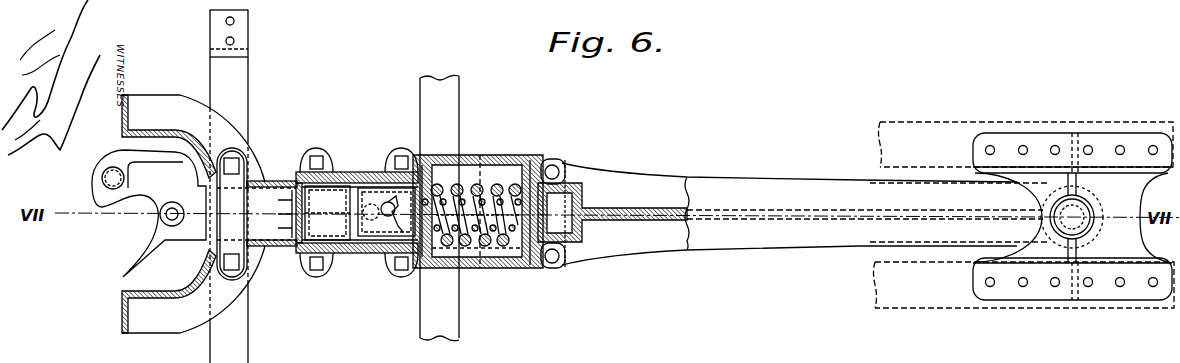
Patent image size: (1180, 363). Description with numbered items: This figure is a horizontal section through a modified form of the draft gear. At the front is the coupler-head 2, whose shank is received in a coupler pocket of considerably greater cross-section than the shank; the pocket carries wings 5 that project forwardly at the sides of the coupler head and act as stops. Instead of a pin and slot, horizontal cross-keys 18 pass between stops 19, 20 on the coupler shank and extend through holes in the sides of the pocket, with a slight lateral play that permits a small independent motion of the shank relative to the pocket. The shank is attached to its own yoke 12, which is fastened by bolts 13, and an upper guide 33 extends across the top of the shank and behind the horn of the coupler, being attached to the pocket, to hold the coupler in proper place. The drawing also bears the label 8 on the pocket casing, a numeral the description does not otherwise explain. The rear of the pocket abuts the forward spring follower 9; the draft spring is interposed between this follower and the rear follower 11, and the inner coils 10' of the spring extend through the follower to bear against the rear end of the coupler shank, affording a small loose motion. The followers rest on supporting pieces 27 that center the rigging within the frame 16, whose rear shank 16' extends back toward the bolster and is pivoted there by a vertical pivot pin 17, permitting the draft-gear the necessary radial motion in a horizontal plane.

The coupler-head 2 is at (149, 213).
The wings 5 is at (193, 214).
The draft casing 8 is at (367, 254).
The forward spring follower 9 is at (427, 256).
The inner coils of the draft springs 10' is at (471, 207).
The rear follower 11 is at (529, 252).
The yoke 12 is at (543, 212).
The bolts 13 is at (382, 212).
The frame 16 is at (478, 203).
The rear shank of the frame 16' is at (806, 214).
The vertical pivot pin 17 is at (1079, 224).
The horizontal cross-keys 18 is at (327, 213).
The stop 19 is at (272, 213).
The stop 20 is at (350, 227).
The supporting pieces 27 is at (503, 250).
The upper guide 33 is at (256, 214).